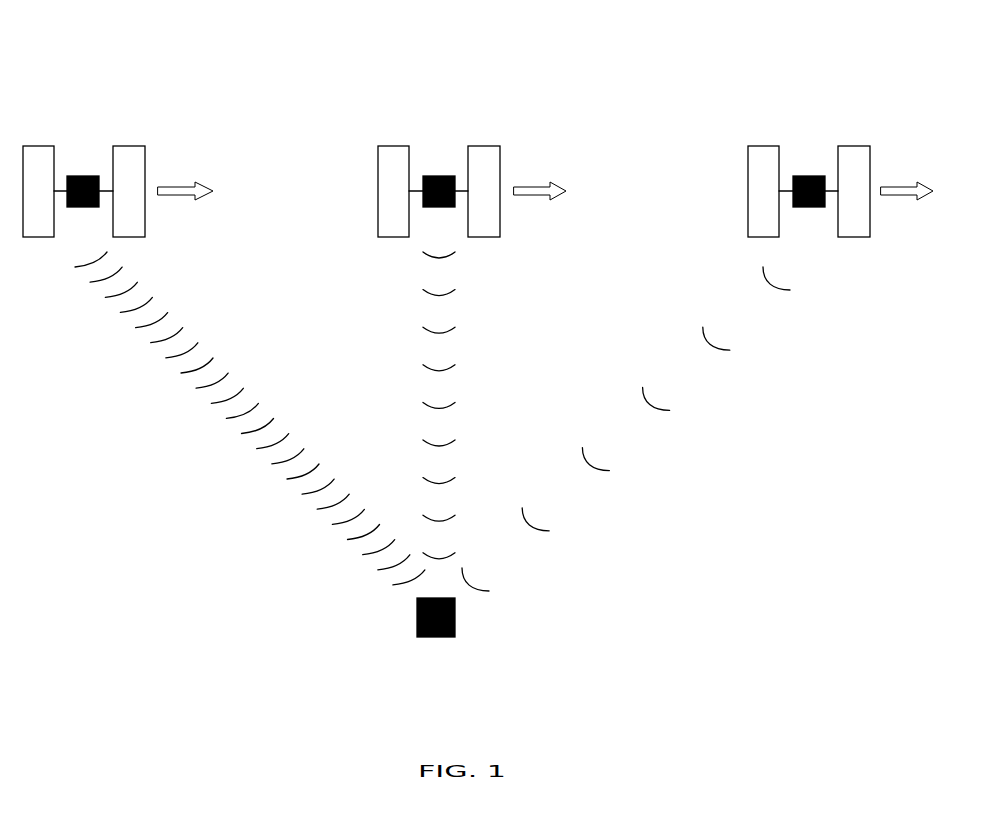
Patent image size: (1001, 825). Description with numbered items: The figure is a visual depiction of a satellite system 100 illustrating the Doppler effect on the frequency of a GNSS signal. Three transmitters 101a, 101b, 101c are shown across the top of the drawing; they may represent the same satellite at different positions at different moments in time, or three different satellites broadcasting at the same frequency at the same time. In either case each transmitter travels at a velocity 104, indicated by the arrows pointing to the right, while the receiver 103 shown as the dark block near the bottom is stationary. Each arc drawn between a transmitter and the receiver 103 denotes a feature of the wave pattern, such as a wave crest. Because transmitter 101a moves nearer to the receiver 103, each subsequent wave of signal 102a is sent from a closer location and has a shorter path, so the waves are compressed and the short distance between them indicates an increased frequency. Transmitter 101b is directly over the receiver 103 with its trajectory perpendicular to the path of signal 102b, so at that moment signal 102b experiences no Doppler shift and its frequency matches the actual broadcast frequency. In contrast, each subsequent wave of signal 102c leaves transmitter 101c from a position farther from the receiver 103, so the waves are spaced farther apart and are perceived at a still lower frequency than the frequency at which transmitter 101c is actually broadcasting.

The satellite system 100 is at (108, 44).
The transmitter 101a is at (86, 176).
The transmitter 101b is at (442, 176).
The transmitter 101c is at (810, 176).
The signal 102a is at (253, 430).
The signal 102b is at (440, 408).
The signal 102c is at (652, 408).
The receiver 103 is at (435, 637).
The velocity 104 is at (204, 190).